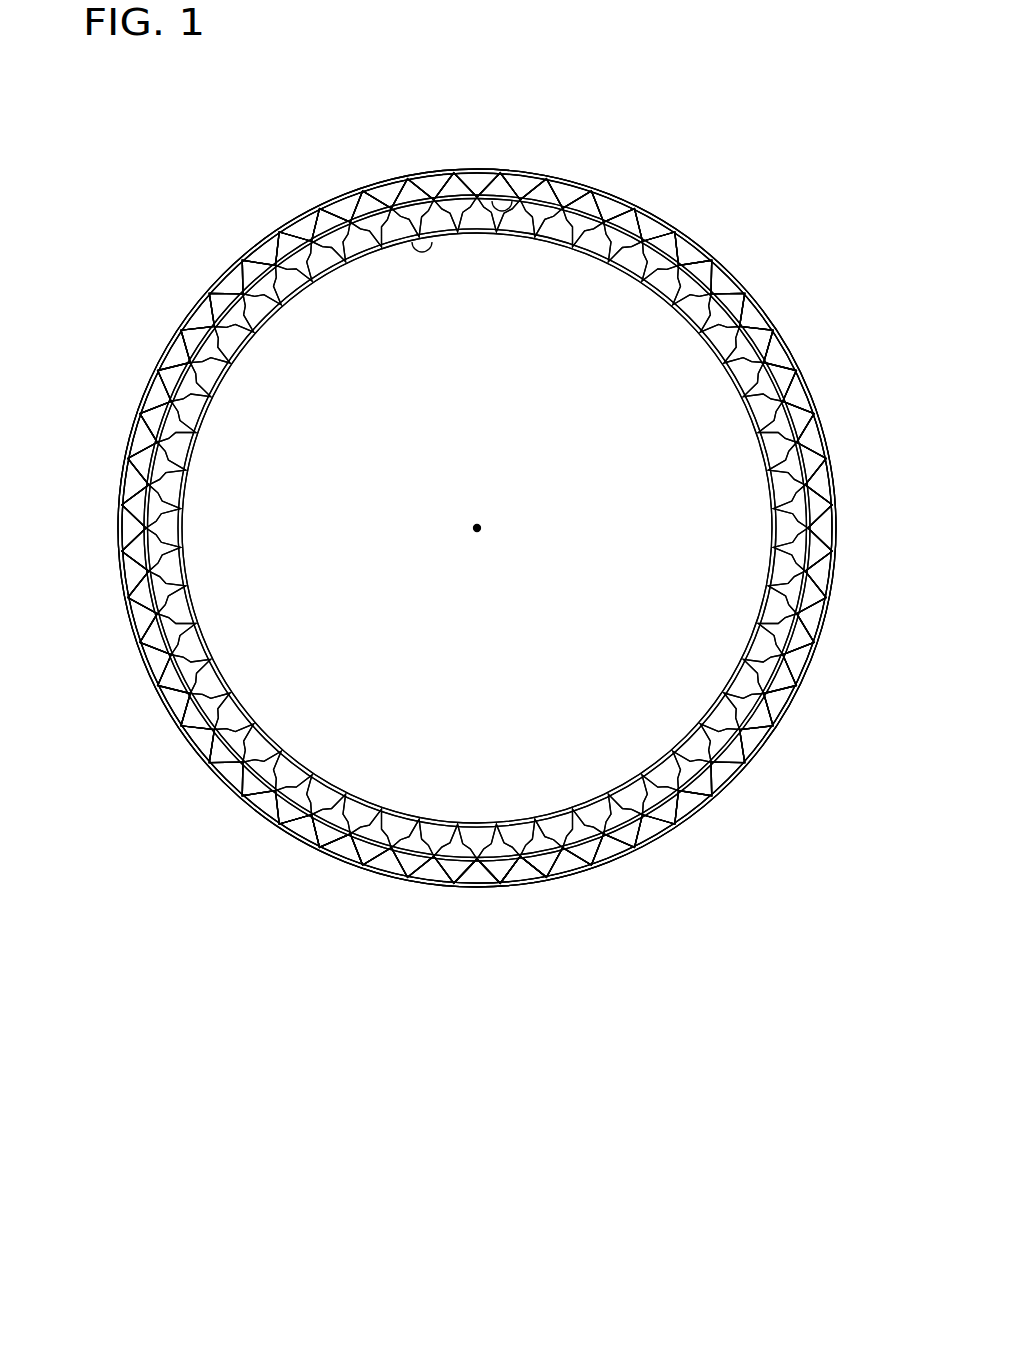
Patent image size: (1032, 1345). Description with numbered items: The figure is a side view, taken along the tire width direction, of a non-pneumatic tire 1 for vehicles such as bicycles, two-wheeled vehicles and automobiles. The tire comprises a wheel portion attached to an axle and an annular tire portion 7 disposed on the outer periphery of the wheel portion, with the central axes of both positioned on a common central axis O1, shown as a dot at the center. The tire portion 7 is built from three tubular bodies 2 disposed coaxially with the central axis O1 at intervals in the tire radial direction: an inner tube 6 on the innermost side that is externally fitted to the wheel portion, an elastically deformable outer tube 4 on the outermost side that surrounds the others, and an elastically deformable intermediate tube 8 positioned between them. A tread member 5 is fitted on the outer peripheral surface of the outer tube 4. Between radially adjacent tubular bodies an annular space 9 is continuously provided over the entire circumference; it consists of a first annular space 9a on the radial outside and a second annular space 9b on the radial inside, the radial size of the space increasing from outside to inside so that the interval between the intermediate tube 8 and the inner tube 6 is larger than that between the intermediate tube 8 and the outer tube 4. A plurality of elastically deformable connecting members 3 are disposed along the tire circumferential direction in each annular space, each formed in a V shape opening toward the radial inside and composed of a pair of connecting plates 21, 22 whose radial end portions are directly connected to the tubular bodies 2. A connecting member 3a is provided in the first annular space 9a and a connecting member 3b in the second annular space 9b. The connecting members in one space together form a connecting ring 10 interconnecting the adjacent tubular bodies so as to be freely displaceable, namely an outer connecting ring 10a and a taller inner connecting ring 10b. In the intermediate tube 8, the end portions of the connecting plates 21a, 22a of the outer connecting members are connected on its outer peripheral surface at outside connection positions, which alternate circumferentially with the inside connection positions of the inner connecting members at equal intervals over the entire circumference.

The non-pneumatic tire 1 is at (818, 153).
The tubular bodies 2 is at (477, 528).
The connecting members 3 is at (477, 528).
The connecting member 3a is at (515, 1019).
The connecting member 3b is at (323, 823).
The outer tube 4 is at (332, 223).
The tread member 5 is at (230, 267).
The inner tube 6 is at (430, 241).
The tire portion 7 is at (627, 195).
The intermediate tube 8 is at (503, 200).
The annular space 9 is at (477, 528).
The first annular space 9a is at (186, 729).
The second annular space 9b is at (226, 753).
The connecting ring 10 is at (477, 528).
The connecting ring 10a is at (623, 1102).
The connecting ring 10b is at (355, 1019).
The connecting plate 21 is at (492, 937).
The connecting plate 21a is at (450, 880).
The connecting plate 22 is at (561, 937).
The connecting plate 22a is at (498, 880).
The central axis O1 is at (481, 528).